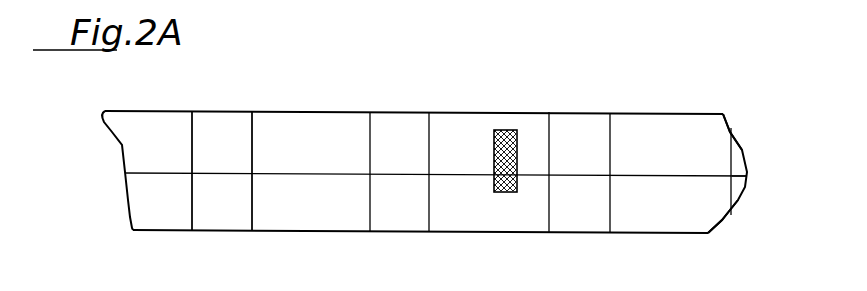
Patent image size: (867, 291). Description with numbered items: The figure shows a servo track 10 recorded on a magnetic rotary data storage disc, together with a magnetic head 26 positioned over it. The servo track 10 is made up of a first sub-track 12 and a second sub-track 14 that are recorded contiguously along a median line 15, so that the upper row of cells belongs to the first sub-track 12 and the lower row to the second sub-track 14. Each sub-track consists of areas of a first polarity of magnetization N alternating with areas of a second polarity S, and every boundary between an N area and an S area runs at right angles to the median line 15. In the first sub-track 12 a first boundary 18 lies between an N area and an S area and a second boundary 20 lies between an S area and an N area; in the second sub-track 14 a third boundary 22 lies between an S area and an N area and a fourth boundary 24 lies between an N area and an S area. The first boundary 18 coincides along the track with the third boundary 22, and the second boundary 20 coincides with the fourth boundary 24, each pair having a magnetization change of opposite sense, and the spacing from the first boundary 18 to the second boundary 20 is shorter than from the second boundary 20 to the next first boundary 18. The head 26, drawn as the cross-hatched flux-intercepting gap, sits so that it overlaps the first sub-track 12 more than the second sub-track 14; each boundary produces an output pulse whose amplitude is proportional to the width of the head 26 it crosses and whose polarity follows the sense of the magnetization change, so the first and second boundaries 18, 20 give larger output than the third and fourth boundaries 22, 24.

The servo track 10 is at (80, 111).
The first sub-track 12 is at (742, 149).
The second sub-track 14 is at (716, 215).
The median line 15 is at (747, 176).
The first boundary 18 is at (192, 111).
The second boundary 20 is at (252, 111).
The third boundary 22 is at (192, 231).
The fourth boundary 24 is at (252, 231).
The magnetic head 26 is at (510, 130).